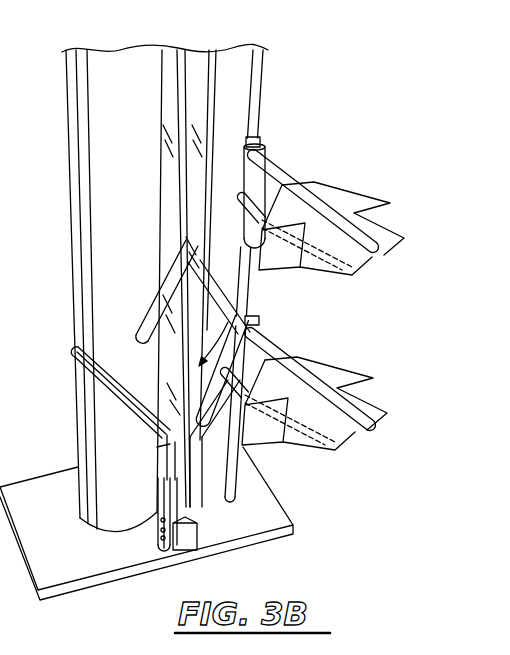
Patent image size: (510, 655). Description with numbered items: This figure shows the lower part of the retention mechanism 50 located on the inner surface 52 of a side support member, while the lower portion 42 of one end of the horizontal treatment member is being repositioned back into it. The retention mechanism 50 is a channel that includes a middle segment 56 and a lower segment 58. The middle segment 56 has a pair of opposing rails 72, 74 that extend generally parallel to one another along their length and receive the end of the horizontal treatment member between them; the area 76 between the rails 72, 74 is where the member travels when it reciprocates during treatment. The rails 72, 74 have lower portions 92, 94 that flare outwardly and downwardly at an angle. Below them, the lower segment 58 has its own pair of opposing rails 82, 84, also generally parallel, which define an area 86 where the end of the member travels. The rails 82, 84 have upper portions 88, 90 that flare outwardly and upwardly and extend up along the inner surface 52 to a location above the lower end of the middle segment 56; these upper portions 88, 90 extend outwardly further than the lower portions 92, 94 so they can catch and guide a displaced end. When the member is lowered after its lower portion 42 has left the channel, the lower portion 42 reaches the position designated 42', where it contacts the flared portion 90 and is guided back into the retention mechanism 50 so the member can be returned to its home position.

The lower portion 42 is at (320, 196).
The repositioned lower portion 42' is at (291, 372).
The retention mechanism 50 is at (242, 103).
The inner surface 52 is at (138, 201).
The middle segment 56 is at (165, 112).
The lower segment 58 is at (163, 480).
The opposing rail 72 is at (165, 70).
The opposing rail 74 is at (217, 72).
The area 76 is at (197, 56).
The opposing rail 82 is at (163, 505).
The opposing rail 84 is at (198, 498).
The area 86 is at (194, 475).
The upper portion 88 is at (120, 393).
The upper portion 90 is at (287, 330).
The lower portion 92 is at (140, 323).
The lower portion 94 is at (227, 297).